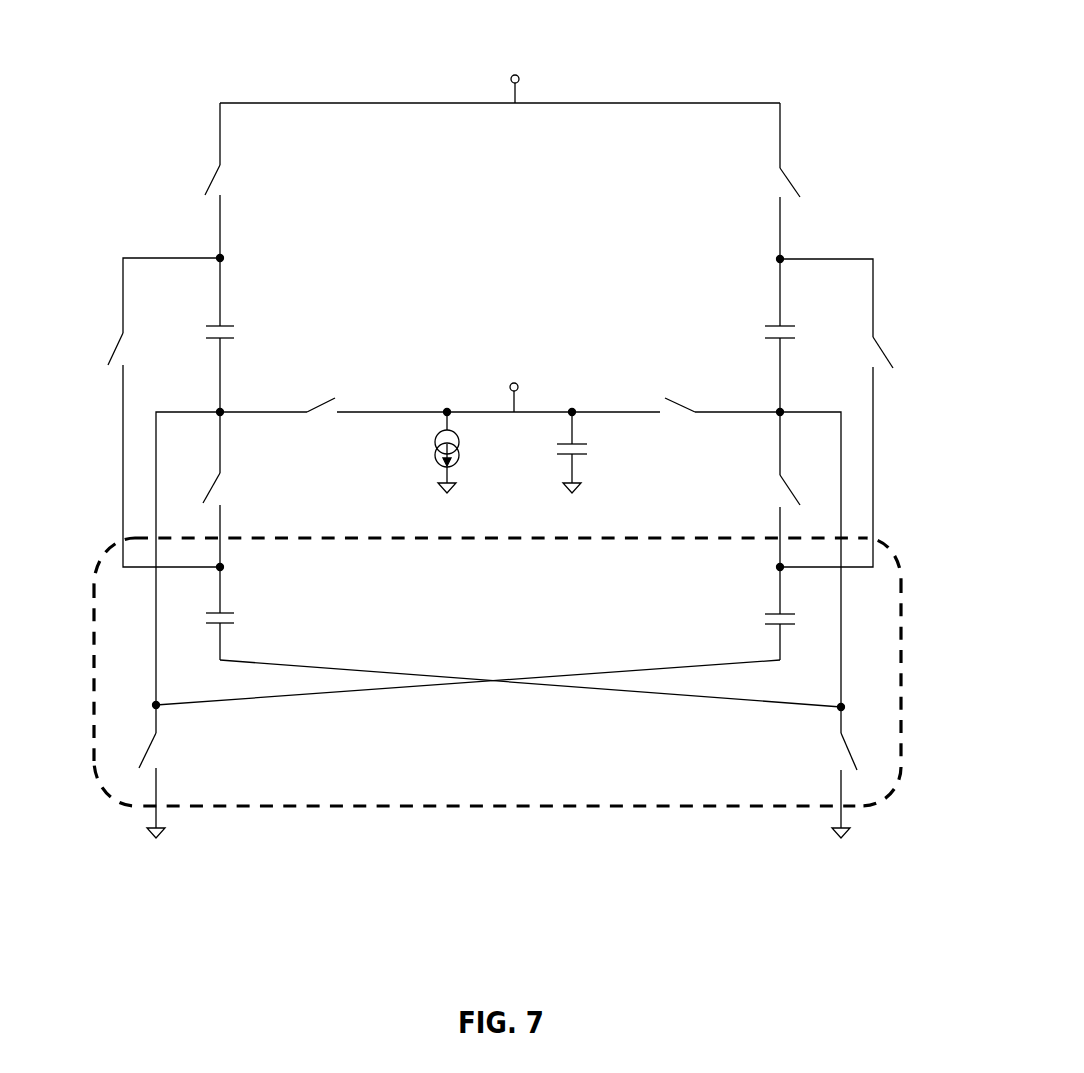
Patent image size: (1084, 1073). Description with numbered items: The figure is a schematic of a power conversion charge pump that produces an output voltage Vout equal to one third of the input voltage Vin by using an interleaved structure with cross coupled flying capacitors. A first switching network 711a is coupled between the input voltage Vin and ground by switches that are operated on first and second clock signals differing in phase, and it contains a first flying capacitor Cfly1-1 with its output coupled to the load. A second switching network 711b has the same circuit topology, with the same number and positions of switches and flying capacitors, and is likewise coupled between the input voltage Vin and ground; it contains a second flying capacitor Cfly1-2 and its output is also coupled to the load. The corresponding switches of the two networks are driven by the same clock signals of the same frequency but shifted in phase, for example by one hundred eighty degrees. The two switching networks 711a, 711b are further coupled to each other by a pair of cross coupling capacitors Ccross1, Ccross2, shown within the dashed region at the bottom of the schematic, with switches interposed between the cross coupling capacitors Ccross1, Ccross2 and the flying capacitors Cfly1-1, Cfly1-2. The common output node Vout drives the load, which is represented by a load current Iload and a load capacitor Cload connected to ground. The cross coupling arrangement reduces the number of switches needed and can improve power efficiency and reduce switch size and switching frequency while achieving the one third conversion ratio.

The first switching network 711a is at (236, 58).
The second switching network 711b is at (776, 56).
The first flying capacitor Cfly1-1 is at (245, 331).
The second flying capacitor Cfly1-2 is at (755, 331).
The cross coupling capacitor Ccross1 is at (246, 619).
The cross coupling capacitor Ccross2 is at (753, 619).
The load current Iload is at (462, 451).
The load capacitor Cload is at (587, 451).
The input voltage Vin is at (515, 79).
The output voltage Vout is at (513, 387).